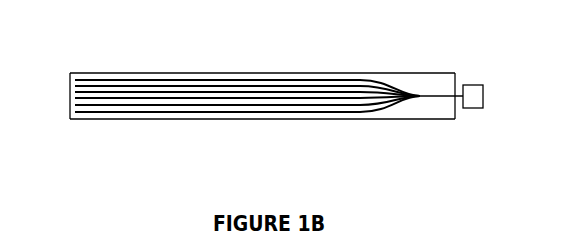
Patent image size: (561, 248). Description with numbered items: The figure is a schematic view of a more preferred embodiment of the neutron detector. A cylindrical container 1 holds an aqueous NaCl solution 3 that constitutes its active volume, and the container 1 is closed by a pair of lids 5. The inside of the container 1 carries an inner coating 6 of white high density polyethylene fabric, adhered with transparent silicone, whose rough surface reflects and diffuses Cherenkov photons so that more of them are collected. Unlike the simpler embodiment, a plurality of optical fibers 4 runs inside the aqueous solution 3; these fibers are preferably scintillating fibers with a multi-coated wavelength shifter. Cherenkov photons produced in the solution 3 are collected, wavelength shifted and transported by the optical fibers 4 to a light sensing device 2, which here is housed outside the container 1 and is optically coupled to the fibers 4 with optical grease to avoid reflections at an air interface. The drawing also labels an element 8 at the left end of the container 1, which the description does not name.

The optical fiber bundle device 1 is at (153, 73).
The light source / detector 2 is at (483, 108).
The fiber tapering region 3 is at (443, 82).
The optical fibers 4 is at (209, 80).
The output end 5 is at (455, 85).
The housing 6 is at (442, 118).
The input end 8 is at (70, 89).